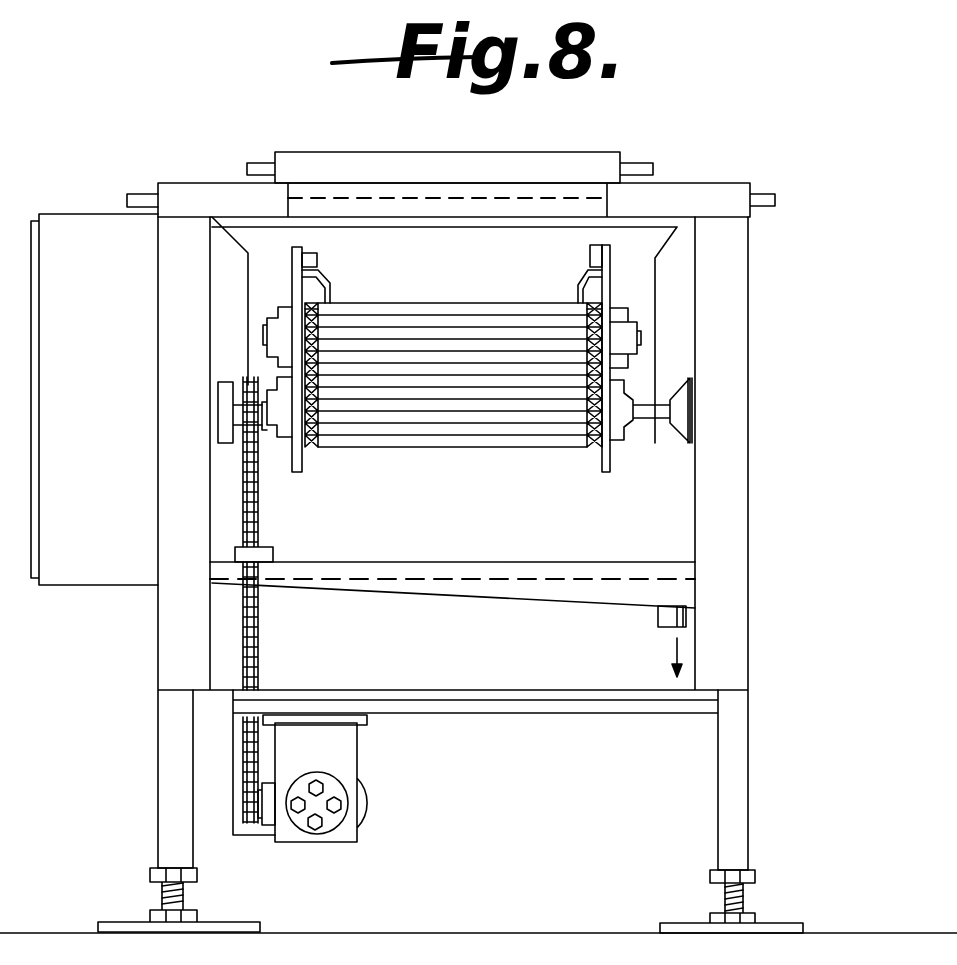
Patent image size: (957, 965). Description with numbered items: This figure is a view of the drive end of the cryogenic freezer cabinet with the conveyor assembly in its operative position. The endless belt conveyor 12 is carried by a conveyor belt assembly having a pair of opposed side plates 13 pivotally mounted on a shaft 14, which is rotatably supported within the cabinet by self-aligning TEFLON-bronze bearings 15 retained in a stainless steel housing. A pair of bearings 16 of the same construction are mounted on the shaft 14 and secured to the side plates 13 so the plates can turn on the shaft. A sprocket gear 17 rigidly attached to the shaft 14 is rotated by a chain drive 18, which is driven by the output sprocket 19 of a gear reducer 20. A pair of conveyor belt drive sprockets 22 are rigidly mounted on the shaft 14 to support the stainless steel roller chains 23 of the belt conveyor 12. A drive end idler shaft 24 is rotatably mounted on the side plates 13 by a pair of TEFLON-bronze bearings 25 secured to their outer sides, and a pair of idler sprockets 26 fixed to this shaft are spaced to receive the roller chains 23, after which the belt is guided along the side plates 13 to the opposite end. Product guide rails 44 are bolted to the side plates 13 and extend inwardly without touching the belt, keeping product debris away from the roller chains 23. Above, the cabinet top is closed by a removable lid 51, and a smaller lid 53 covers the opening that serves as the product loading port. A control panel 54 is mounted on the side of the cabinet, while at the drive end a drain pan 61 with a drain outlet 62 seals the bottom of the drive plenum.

The endless belt conveyor 12 is at (485, 444).
The side plates 13 is at (292, 283).
The shaft 14 is at (240, 417).
The bearings 15 is at (272, 396).
The bearings 16 is at (268, 362).
The sprocket gear 17 is at (247, 463).
The chain drive 18 is at (263, 644).
The output sprocket 19 is at (262, 832).
The gear reducer 20 is at (363, 824).
The conveyor belt drive sprockets 22 is at (313, 446).
The roller chains 23 is at (318, 346).
The drive end idler shaft 24 is at (641, 338).
The bearings 25 is at (275, 312).
The idler sprockets 26 is at (323, 345).
The product guide rails 44 is at (320, 277).
The removable lid 51 is at (706, 192).
The smaller lid 53 is at (461, 142).
The control panels 54 is at (128, 578).
The drain pan 61 is at (517, 592).
The drain outlet 62 is at (672, 628).